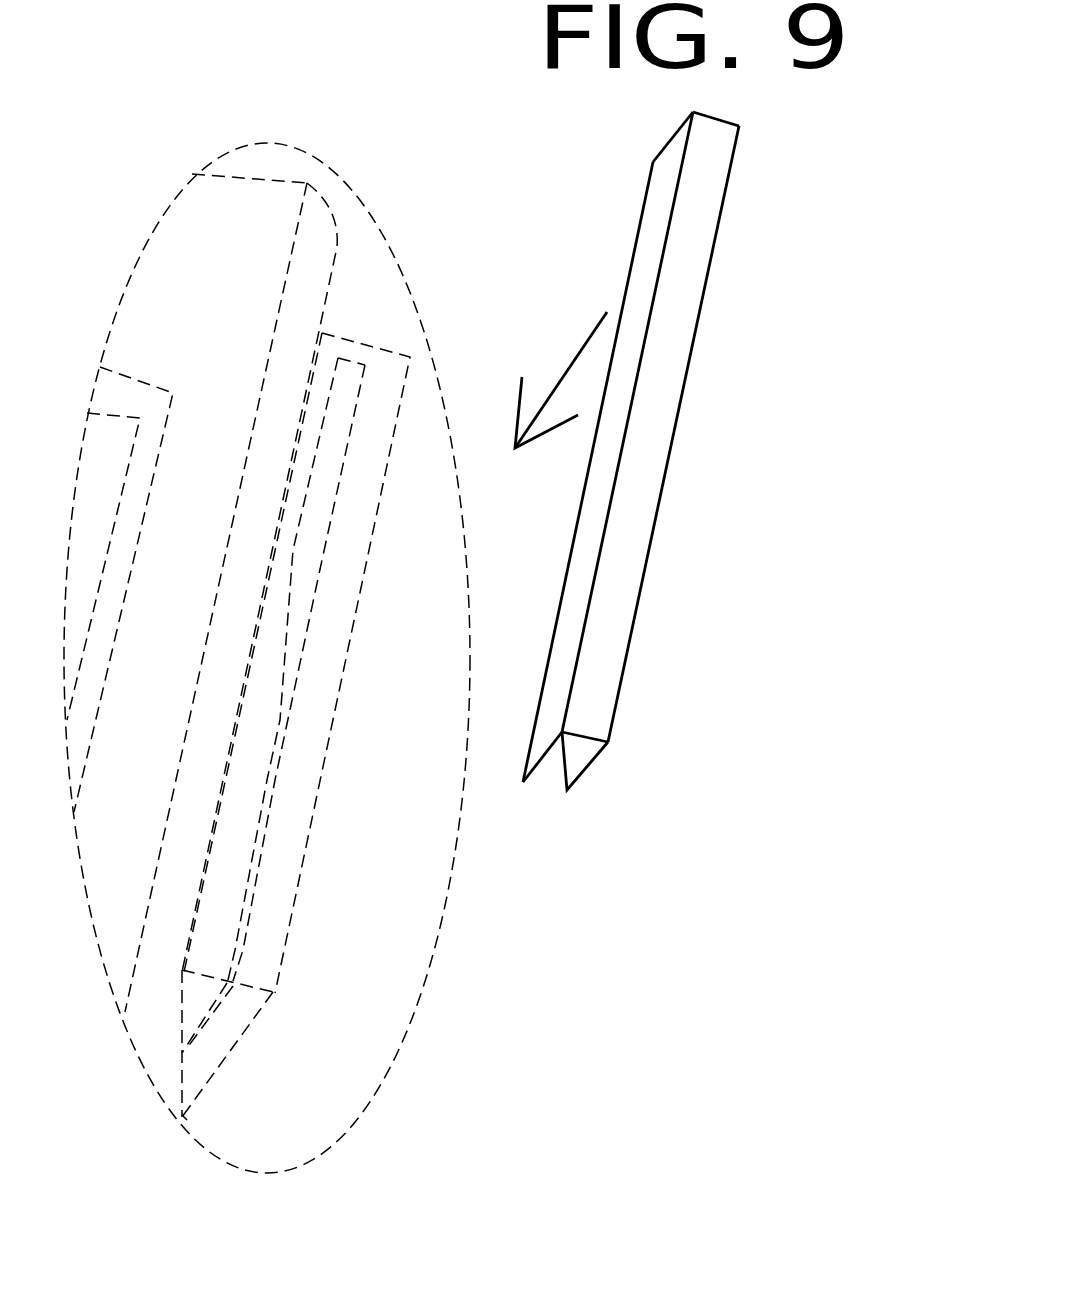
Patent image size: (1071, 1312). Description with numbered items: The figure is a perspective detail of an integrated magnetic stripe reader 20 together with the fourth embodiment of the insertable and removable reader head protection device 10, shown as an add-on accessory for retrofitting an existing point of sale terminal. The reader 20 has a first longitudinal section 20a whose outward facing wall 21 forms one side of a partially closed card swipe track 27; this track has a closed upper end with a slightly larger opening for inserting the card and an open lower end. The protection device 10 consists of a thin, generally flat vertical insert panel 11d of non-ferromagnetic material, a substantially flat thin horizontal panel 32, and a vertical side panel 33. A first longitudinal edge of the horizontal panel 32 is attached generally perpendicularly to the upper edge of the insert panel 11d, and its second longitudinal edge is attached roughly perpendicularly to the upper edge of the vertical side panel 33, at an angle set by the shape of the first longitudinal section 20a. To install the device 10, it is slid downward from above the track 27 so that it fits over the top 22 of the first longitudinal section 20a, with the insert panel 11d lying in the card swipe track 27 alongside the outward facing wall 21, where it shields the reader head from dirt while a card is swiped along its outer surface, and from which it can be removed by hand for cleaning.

The reader head protection device 10 is at (708, 413).
The flat vertical insert panel 11d is at (642, 303).
The horizontal panel 32 is at (705, 283).
The vertical side panel 33 is at (585, 753).
The magnetic stripe reader 20 is at (380, 300).
The first longitudinal section 20a is at (258, 1048).
The outward facing wall 21 is at (315, 600).
The top 22 is at (307, 845).
The card swipe track 27 is at (328, 467).